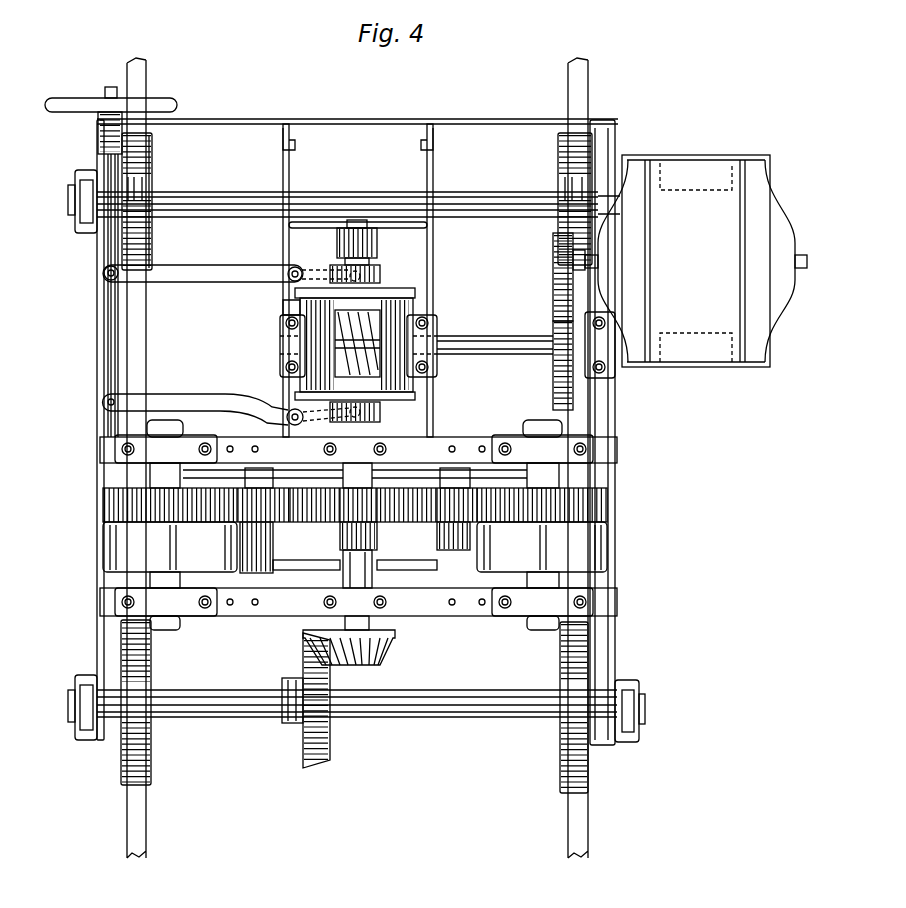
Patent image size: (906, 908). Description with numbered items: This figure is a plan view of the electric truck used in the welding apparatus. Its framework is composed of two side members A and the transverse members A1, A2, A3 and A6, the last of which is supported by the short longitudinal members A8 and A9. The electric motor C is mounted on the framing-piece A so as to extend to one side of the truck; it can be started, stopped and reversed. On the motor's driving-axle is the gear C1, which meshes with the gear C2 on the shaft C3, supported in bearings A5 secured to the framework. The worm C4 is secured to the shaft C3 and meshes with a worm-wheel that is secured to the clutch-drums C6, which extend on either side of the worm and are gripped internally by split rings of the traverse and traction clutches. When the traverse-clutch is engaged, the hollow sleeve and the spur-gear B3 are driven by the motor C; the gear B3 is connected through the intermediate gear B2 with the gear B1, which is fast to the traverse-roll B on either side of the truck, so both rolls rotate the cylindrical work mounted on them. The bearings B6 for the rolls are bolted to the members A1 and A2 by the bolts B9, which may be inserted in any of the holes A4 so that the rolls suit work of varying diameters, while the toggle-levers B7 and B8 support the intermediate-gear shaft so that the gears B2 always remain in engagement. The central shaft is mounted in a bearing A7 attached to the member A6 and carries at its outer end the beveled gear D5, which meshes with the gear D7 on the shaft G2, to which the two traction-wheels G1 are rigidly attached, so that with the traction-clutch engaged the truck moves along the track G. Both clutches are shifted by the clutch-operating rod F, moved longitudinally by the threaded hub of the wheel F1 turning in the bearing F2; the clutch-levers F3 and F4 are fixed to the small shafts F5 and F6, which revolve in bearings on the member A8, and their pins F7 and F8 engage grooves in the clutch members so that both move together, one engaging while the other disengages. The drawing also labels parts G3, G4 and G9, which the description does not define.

The side member A is at (97, 638).
The transverse member A1 is at (435, 614).
The transverse member A2 is at (432, 445).
The transverse member A3 is at (498, 123).
The holes A4 is at (232, 605).
The bearings A5 is at (283, 353).
The transverse member A6 is at (432, 222).
The bearing A7 is at (377, 243).
The short longitudinal member A8 is at (283, 247).
The short longitudinal member A9 is at (433, 268).
The traverse-roll B is at (355, 547).
The gear B1 is at (118, 497).
The intermediate gear B2 is at (432, 530).
The spur-gear B3 is at (377, 535).
The bearings B6 is at (526, 440).
The toggle-lever B7 is at (247, 538).
The toggle-lever B8 is at (318, 562).
The bolts B9 is at (208, 610).
The electric motor C is at (715, 362).
The gear C1 is at (553, 262).
The gear C2 is at (553, 312).
The shaft C3 is at (527, 355).
The worm C4 is at (385, 320).
The clutch-drums C6 is at (283, 312).
The beveled gear D5 is at (392, 650).
The beveled gear D7 is at (312, 762).
The clutch-operating rod F is at (108, 325).
The clutch-wheel F1 is at (78, 108).
The bearing F2 is at (98, 142).
The clutch-lever F3 is at (187, 282).
The clutch-lever F4 is at (186, 395).
The small shaft F5 is at (335, 268).
The small shaft F6 is at (288, 418).
The pin F7 is at (380, 278).
The pin F8 is at (380, 412).
The track G is at (138, 800).
The traction-wheels G1 is at (149, 728).
The shaft G2 is at (450, 716).
The gear G3 is at (560, 170).
The upper shaft G4 is at (363, 200).
The gear G9 is at (152, 186).